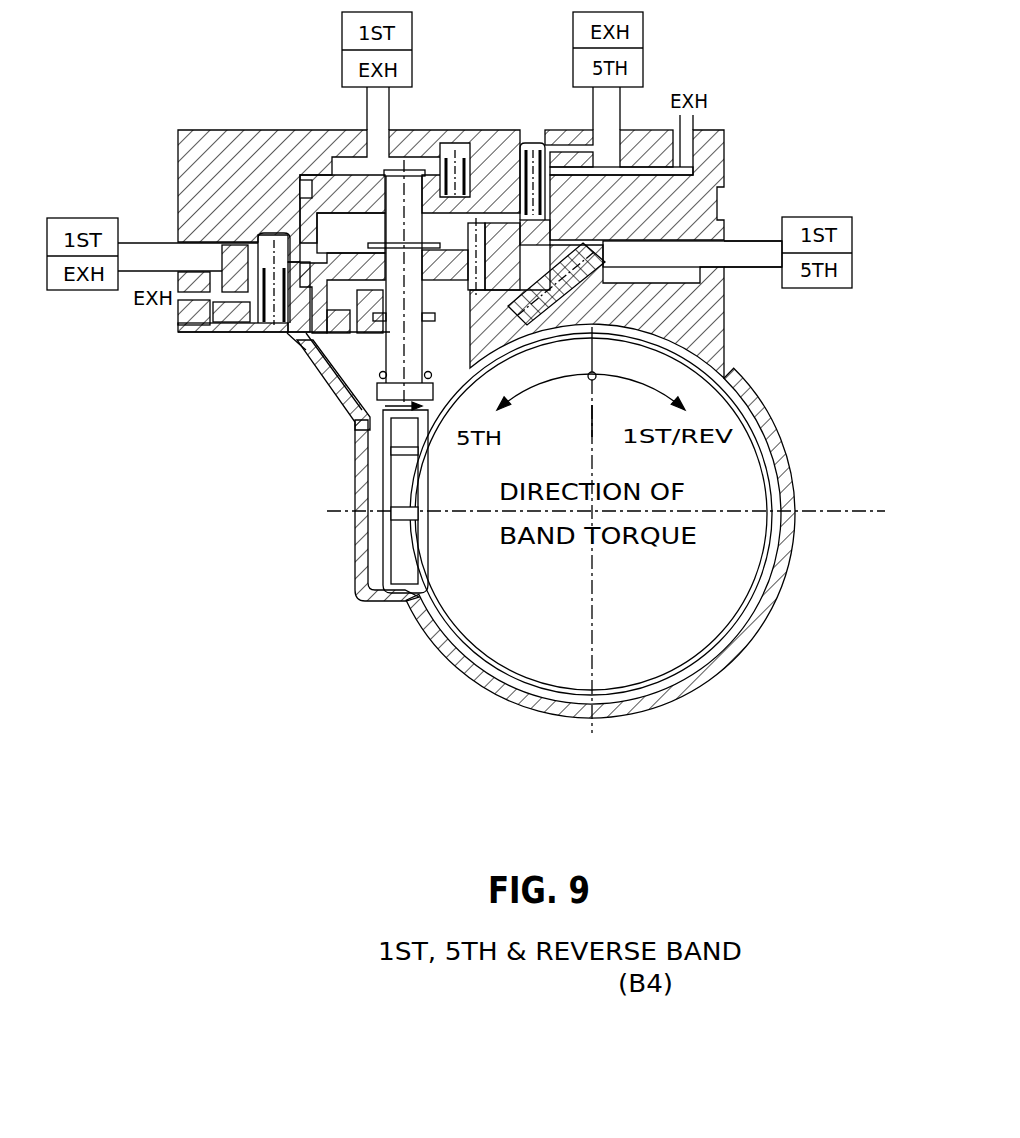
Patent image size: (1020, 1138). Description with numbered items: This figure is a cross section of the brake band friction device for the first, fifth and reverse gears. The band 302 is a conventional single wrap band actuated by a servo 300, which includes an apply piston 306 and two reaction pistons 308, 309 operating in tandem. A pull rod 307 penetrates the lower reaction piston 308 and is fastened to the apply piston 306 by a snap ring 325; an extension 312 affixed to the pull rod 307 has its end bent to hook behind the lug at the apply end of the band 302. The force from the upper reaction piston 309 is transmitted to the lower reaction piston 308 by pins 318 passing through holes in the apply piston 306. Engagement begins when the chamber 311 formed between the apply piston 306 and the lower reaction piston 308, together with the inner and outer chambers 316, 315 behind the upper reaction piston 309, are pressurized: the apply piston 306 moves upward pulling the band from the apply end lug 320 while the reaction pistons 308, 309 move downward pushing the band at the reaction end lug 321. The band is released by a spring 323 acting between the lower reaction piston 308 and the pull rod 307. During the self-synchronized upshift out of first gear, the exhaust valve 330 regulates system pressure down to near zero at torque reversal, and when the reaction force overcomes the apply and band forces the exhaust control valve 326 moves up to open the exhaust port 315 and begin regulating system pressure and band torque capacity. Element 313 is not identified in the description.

The servo 300 is at (800, 352).
The band 302 is at (760, 427).
The apply piston 306 is at (320, 195).
The pull rod 307 is at (387, 390).
The lower reaction piston 308 is at (303, 340).
The upper reaction piston 309 is at (437, 215).
The chamber 311 is at (298, 345).
The extension 312 is at (382, 448).
The valve spool 313 is at (345, 225).
The outer chamber 315 is at (637, 137).
The inner chamber 316 is at (345, 175).
The pins 318 is at (478, 228).
The apply end lug 320 is at (400, 560).
The reaction end lug 321 is at (400, 470).
The spring 323 is at (377, 363).
The snap ring 325 is at (448, 175).
The exhaust control valve 326 is at (553, 203).
The exhaust valve 330 is at (256, 240).